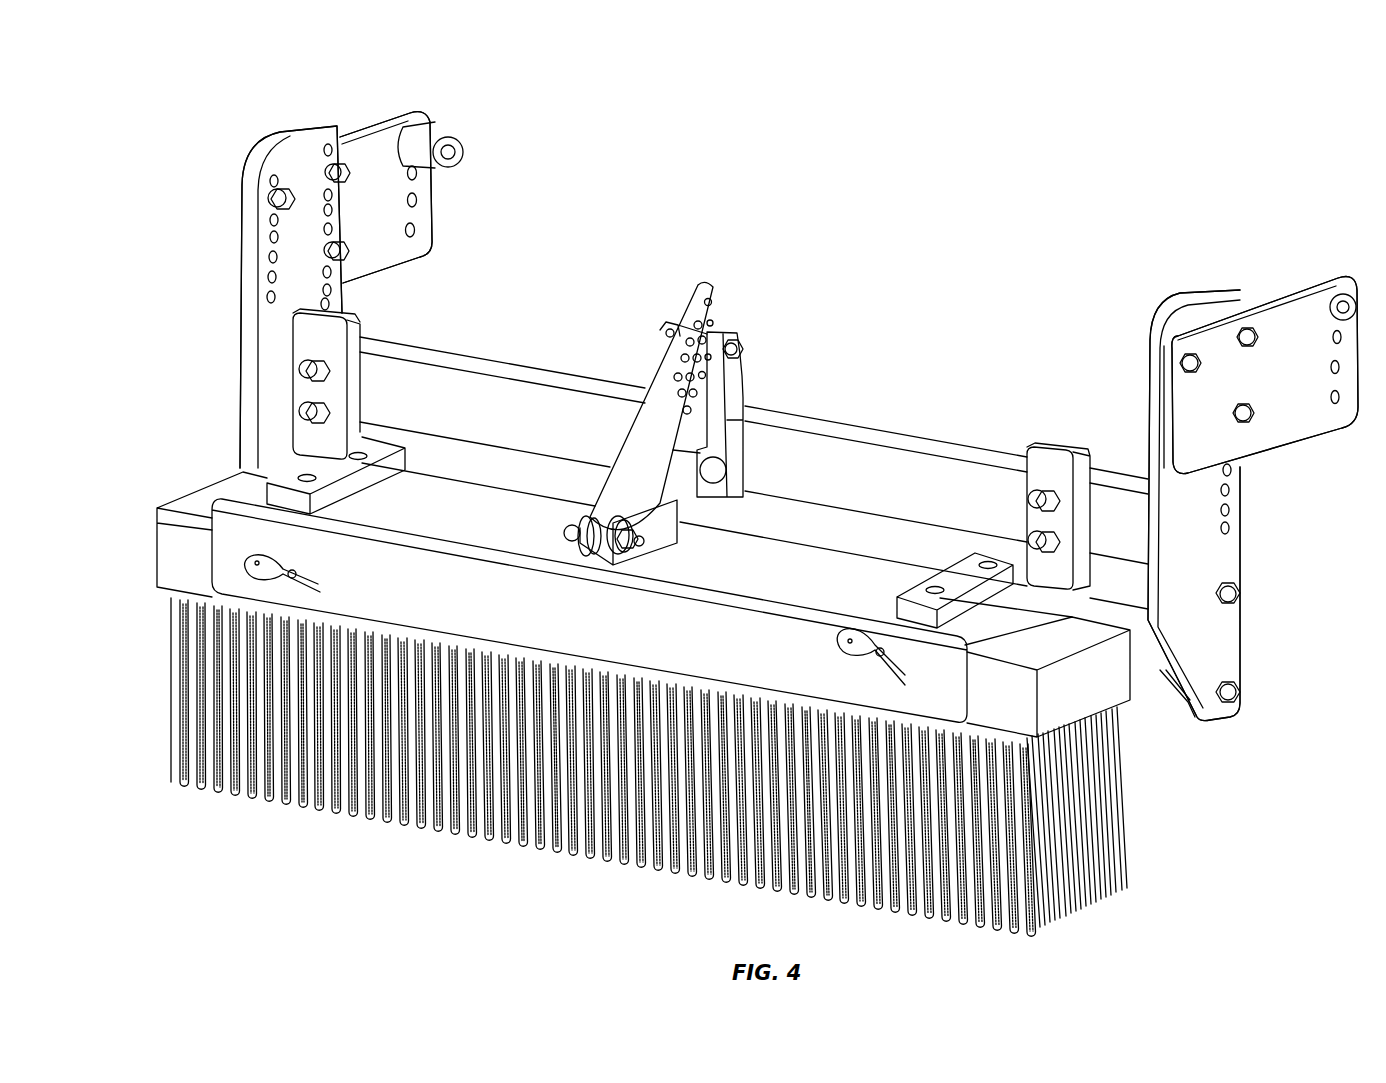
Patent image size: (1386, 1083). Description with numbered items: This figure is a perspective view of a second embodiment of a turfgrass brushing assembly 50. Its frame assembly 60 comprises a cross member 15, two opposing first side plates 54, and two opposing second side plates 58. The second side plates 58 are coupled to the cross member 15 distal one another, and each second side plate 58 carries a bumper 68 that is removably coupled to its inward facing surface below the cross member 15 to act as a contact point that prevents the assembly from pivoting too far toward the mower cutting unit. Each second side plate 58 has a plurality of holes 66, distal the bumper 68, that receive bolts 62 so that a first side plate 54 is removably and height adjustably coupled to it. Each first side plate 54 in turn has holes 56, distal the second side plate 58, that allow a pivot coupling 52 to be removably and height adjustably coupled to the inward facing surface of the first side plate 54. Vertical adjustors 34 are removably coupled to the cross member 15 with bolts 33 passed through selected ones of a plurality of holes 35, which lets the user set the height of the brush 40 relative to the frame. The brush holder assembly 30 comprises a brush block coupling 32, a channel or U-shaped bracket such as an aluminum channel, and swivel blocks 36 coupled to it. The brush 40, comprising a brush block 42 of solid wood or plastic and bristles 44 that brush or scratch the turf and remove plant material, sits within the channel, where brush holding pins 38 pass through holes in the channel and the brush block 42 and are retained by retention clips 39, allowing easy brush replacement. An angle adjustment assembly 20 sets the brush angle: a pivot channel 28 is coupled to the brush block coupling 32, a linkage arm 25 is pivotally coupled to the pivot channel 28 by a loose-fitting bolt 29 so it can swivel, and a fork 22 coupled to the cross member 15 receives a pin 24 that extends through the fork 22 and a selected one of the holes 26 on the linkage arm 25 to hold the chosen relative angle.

The cross member 15 is at (515, 366).
The angle adjustment assembly 20 is at (654, 397).
The fork 22 is at (722, 319).
The pin 24 is at (743, 351).
The linkage arm 25 is at (645, 435).
The holes 26 is at (703, 364).
The pivot channel 28 is at (660, 540).
The loose-fitting bolt 29 is at (568, 528).
The brush holder assembly 30 is at (818, 530).
The brush block coupling 32 is at (233, 573).
The bolts 33 is at (300, 372).
The vertical adjustor 34 is at (338, 380).
The holes 35 is at (1032, 523).
The swivel blocks 36 is at (340, 468).
The brush holding pins 38 is at (306, 582).
The retention clips 39 is at (266, 551).
The brush 40 is at (612, 622).
The brush block 42 is at (1078, 670).
The bristles 44 is at (440, 780).
The turfgrass brushing assembly 50 is at (1185, 457).
The pivot coupling 52 is at (427, 128).
The first side plate 54 is at (376, 118).
The holes 56 is at (418, 207).
The second side plate 58 is at (293, 132).
The frame assembly 60 is at (234, 109).
The bolts 62 is at (268, 207).
The holes 66 is at (270, 262).
The bumper 68 is at (1172, 693).